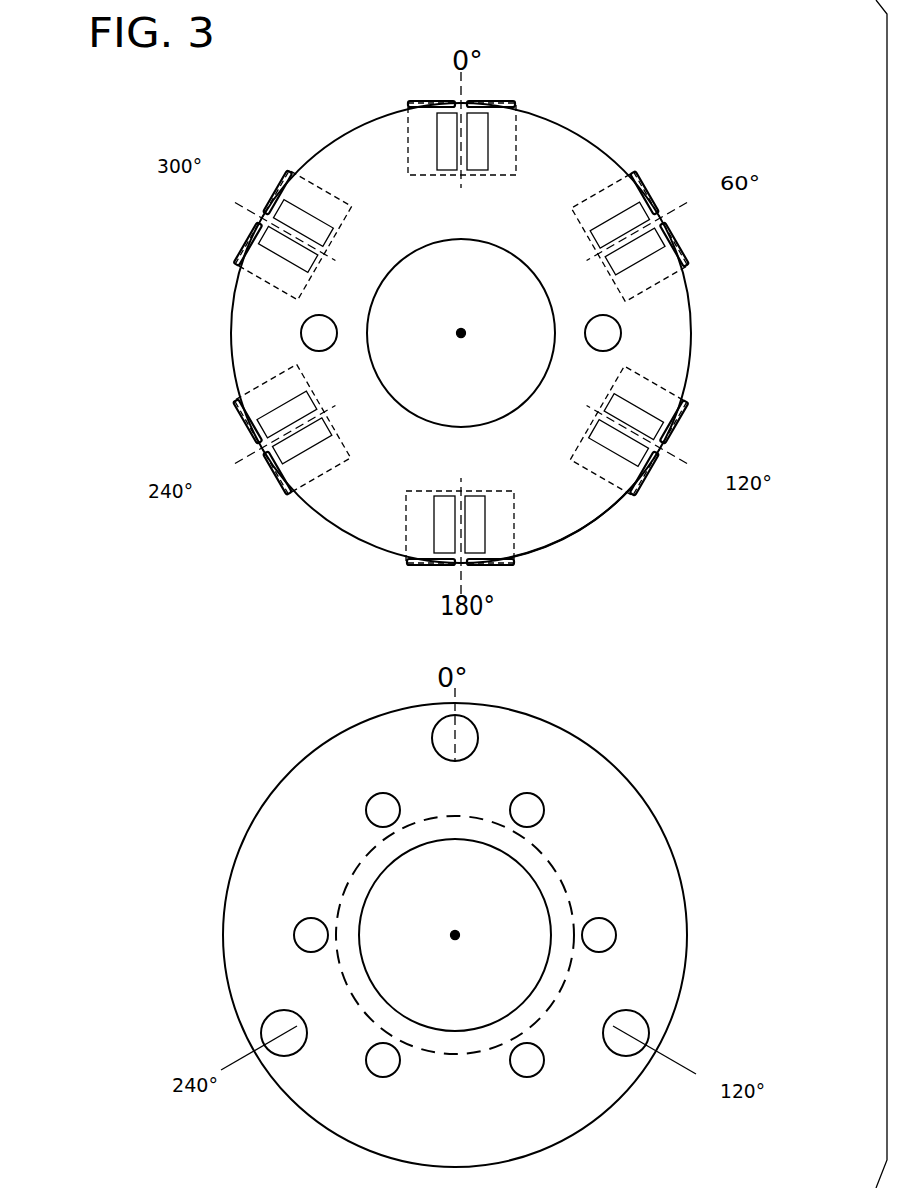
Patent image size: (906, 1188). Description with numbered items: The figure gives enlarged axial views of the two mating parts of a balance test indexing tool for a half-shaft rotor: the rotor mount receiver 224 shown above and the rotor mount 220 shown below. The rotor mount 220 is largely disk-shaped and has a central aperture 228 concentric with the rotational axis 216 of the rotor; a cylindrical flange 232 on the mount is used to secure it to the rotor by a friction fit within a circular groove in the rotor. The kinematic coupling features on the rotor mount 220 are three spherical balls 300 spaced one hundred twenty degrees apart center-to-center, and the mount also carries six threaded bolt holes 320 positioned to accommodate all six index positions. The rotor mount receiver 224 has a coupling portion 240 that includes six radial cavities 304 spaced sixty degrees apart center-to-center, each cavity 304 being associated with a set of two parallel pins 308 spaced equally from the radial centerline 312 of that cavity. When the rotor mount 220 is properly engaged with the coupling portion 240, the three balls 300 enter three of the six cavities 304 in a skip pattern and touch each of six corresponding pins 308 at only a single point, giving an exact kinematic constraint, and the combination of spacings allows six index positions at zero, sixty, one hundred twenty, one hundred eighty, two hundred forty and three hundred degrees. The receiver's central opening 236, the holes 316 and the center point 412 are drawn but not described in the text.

The rotational axis 216 is at (458, 330).
The rotor mount 220 is at (228, 815).
The rotor mount receiver 224 is at (347, 546).
The central aperture 228 is at (390, 868).
The cylindrical flange 232 is at (573, 885).
The central opening of top plate 236 is at (500, 418).
The coupling portion 240 is at (576, 533).
The spherical balls 300 is at (478, 737).
The radial cavities 304 is at (457, 141).
The parallel pins 308 is at (433, 102).
The radial centerline 312 is at (462, 84).
The alignment holes 316 is at (300, 332).
The threaded bolt holes 320 is at (372, 797).
The rotational axis of bottom plate 412 is at (453, 930).